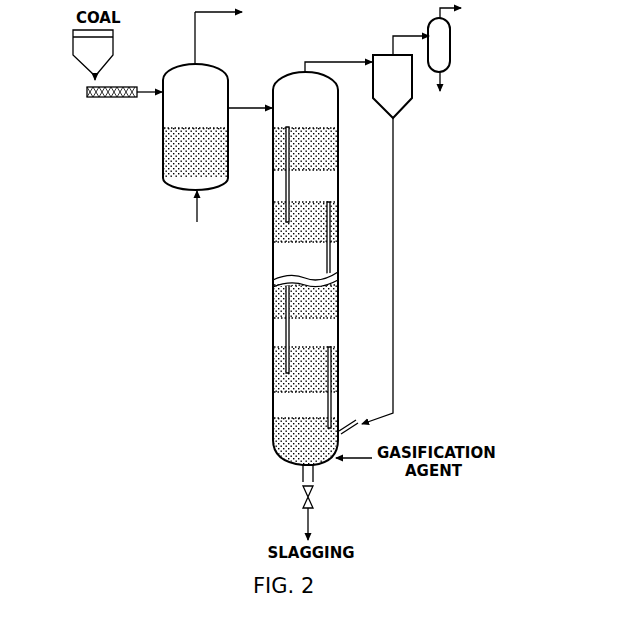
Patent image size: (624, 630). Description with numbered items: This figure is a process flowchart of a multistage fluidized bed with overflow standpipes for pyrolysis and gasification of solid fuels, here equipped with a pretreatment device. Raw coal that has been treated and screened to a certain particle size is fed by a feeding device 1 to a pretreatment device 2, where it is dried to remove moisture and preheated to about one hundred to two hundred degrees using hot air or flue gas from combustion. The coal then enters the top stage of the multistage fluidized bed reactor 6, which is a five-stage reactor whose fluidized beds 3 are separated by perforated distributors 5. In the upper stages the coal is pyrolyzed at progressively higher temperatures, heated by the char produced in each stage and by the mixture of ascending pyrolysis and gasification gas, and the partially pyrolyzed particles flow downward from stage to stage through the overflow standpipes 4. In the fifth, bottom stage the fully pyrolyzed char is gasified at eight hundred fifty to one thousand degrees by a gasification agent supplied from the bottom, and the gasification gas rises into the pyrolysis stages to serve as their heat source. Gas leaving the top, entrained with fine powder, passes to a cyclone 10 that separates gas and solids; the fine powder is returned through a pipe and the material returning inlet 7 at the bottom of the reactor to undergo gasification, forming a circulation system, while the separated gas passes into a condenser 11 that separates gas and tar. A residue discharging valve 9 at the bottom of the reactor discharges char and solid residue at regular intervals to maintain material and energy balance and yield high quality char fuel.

The feeding device 1 is at (87, 90).
The pretreatment device 2 is at (163, 128).
The fluidized beds 3 is at (306, 259).
The overflow standpipes 4 is at (286, 142).
The perforated distributors 5 is at (340, 170).
The multistage fluidized bed reactor 6 is at (290, 72).
The material returning inlet 7 is at (352, 418).
The residue discharging valve 9 is at (303, 495).
The cyclone 10 is at (373, 55).
The condenser 11 is at (430, 25).